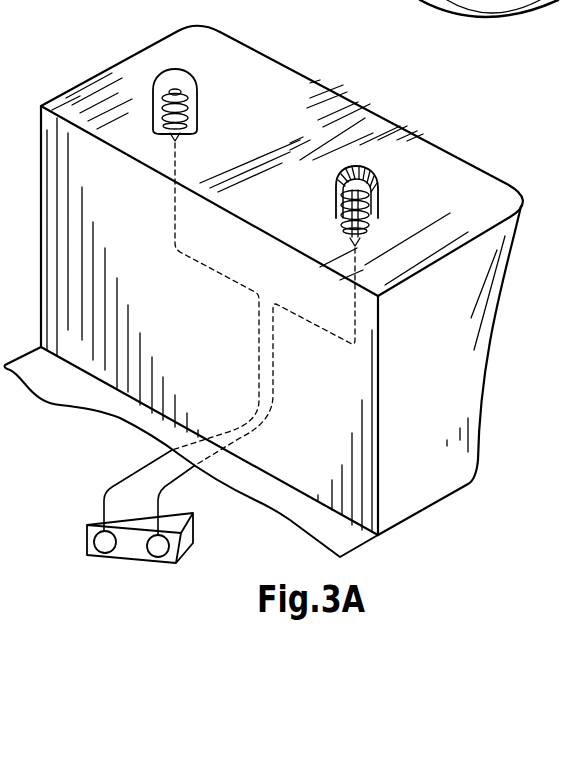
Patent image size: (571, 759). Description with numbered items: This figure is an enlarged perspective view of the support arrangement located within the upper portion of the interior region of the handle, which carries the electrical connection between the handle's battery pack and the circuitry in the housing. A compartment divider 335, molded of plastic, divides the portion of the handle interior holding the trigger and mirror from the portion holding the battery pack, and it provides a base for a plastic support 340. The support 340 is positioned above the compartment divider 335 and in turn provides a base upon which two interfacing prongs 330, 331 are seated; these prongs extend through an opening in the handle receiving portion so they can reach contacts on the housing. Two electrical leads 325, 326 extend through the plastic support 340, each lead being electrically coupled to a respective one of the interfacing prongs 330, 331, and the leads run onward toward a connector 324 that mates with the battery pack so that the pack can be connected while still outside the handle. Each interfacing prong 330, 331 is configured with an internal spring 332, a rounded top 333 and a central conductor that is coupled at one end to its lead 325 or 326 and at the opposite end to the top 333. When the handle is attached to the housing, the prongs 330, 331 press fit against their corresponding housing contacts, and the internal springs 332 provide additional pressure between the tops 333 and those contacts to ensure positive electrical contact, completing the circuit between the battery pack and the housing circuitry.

The connector 324 is at (188, 544).
The electrical lead 325 is at (123, 472).
The electrical lead 326 is at (170, 482).
The interfacing prong 330 is at (378, 192).
The interfacing prong 331 is at (158, 73).
The internal spring 332 is at (200, 107).
The rounded top 333 is at (198, 83).
The compartment divider 335 is at (322, 523).
The plastic support 340 is at (448, 358).